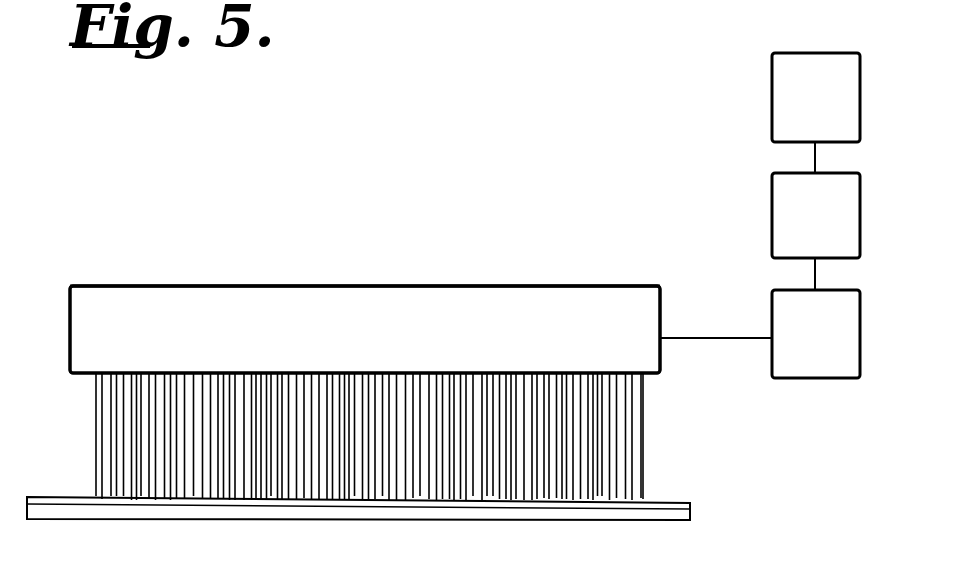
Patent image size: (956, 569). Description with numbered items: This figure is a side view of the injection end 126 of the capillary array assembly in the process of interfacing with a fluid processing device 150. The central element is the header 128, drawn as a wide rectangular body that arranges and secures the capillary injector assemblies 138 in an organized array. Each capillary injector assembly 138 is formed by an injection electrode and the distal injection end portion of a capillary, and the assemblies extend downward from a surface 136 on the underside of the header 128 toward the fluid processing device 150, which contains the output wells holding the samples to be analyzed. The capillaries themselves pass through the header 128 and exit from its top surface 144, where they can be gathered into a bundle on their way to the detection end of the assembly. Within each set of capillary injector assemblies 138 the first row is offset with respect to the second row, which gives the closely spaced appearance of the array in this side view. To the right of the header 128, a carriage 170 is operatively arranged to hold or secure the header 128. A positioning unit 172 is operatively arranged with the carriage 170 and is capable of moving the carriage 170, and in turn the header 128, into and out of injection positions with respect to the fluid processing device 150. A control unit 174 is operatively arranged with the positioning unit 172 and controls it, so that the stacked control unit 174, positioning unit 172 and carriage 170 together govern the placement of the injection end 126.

The injection end 126 is at (44, 305).
The header 128 is at (383, 298).
The top surface 144 is at (632, 257).
The capillary injector assembly 138 is at (95, 447).
The fluid processing device 150 is at (658, 501).
The surface 136 is at (651, 378).
The carriage 170 is at (816, 318).
The positioning unit 172 is at (816, 200).
The control unit 174 is at (816, 97).